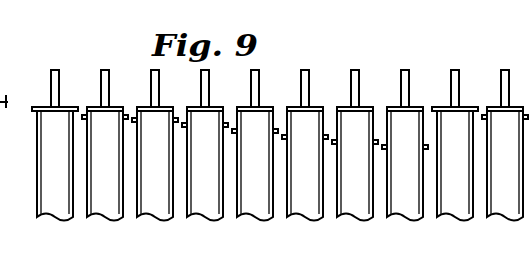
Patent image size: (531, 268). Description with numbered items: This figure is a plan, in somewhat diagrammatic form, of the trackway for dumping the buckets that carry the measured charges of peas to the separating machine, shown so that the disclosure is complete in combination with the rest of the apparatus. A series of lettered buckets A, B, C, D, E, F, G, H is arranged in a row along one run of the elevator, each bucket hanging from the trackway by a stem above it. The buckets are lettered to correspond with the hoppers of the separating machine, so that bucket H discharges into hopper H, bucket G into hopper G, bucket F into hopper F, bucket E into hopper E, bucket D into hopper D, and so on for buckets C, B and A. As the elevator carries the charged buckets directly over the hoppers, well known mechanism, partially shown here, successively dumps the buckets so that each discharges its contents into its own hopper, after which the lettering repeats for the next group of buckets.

The bucket A is at (255, 145).
The bucket B is at (305, 145).
The bucket C is at (155, 145).
The bucket D is at (205, 145).
The bucket E is at (255, 145).
The bucket F is at (305, 145).
The bucket G is at (355, 145).
The bucket H is at (405, 145).